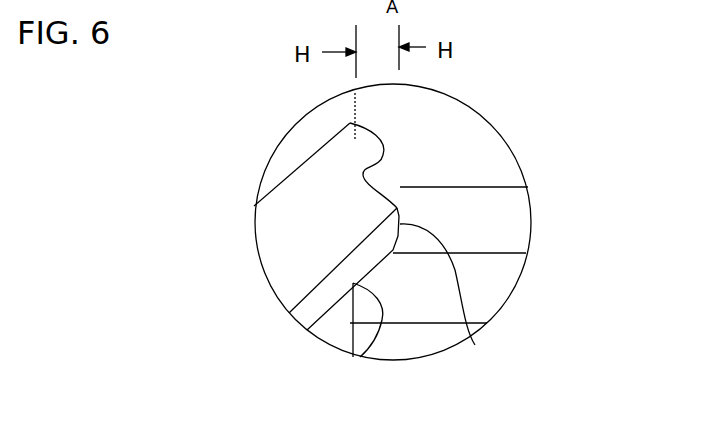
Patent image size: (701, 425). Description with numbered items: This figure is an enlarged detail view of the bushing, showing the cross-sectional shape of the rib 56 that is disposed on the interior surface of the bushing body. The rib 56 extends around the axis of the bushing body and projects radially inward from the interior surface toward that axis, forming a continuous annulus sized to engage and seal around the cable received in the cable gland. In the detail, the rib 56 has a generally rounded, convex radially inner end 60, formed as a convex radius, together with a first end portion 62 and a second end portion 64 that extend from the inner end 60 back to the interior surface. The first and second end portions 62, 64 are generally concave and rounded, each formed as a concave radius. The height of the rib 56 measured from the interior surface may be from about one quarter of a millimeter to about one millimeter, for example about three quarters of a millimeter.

The rib 56 is at (497, 228).
The radially inner end 60 is at (475, 345).
The first end portion 62 is at (487, 121).
The second end portion 64 is at (356, 327).